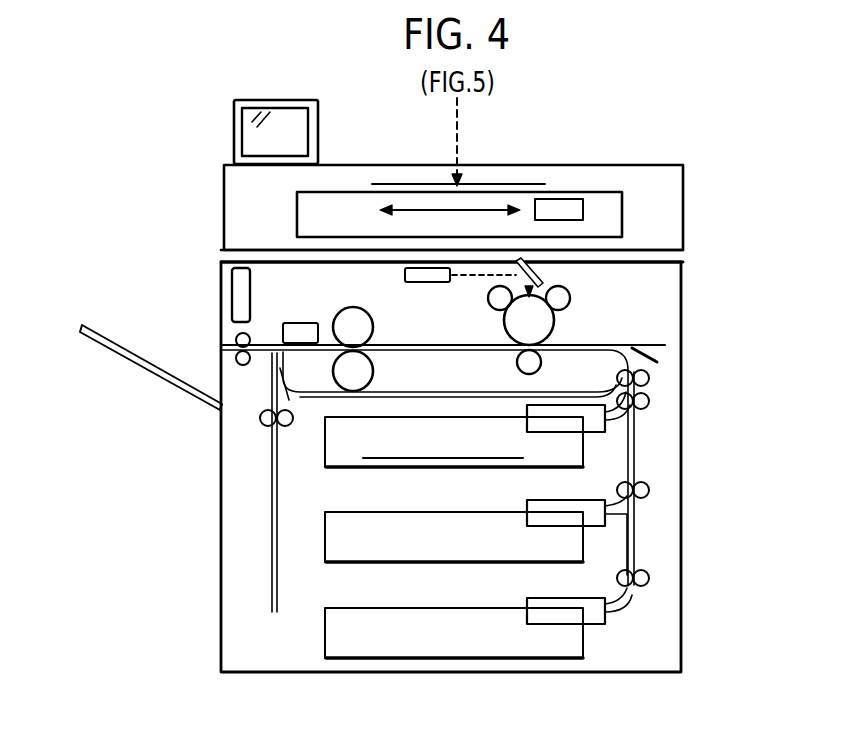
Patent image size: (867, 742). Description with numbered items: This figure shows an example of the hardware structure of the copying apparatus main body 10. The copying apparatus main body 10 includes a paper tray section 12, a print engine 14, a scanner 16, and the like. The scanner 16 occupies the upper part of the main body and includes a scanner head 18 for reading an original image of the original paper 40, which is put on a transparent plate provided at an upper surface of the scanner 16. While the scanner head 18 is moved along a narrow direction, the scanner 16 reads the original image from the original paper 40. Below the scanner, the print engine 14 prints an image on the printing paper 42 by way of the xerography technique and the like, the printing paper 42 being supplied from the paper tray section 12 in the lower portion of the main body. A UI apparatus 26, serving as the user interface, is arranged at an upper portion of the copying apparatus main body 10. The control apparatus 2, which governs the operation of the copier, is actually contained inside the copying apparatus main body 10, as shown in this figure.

The copying apparatus main body 10 is at (461, 709).
The UI apparatus 26 is at (234, 127).
The scanner 16 is at (622, 200).
The original paper 40 is at (512, 186).
The scanner head 18 is at (584, 211).
The control apparatus 2 is at (232, 283).
The print engine 14 is at (602, 305).
The printing paper 42 is at (392, 458).
The paper tray section 12 is at (663, 481).